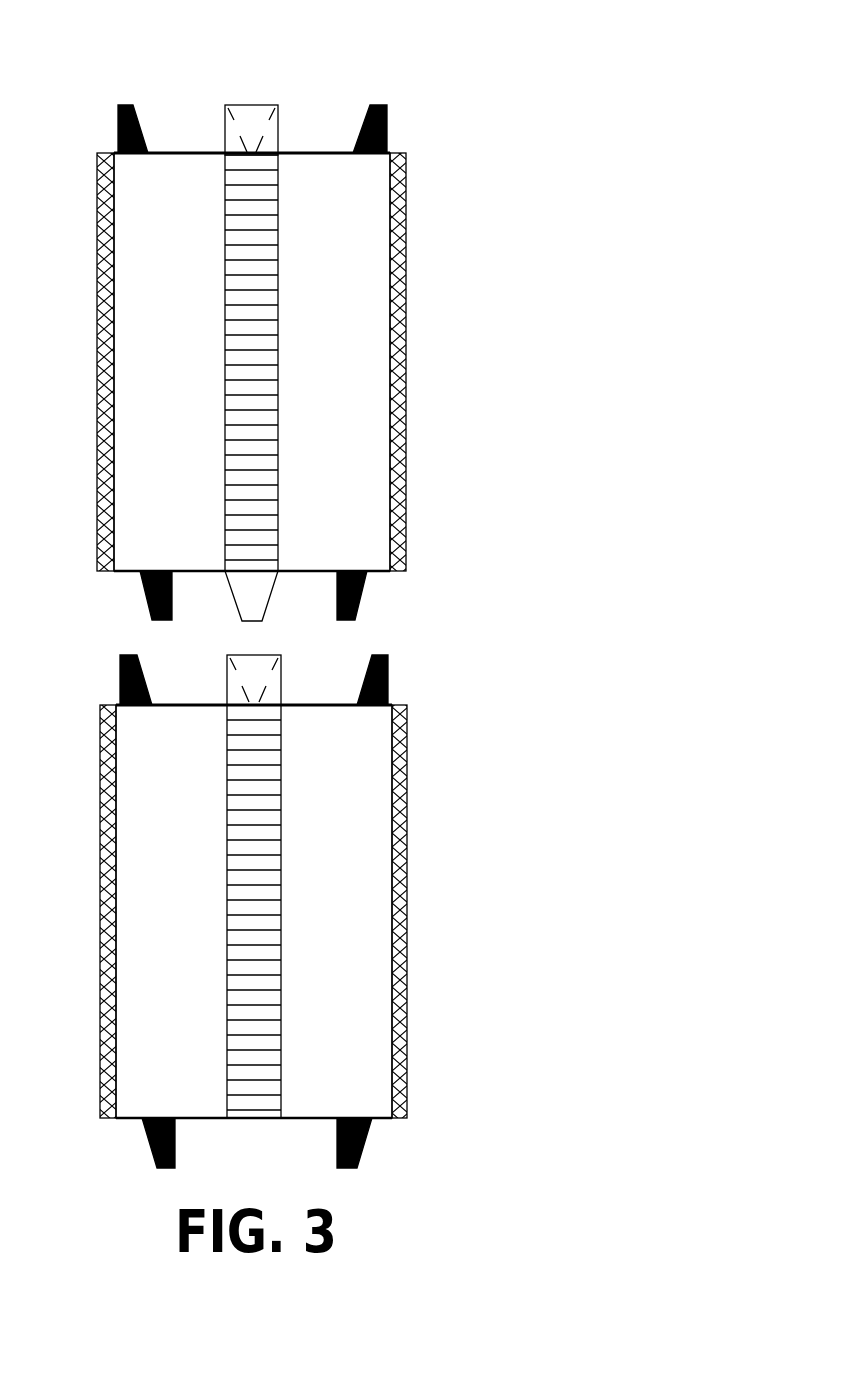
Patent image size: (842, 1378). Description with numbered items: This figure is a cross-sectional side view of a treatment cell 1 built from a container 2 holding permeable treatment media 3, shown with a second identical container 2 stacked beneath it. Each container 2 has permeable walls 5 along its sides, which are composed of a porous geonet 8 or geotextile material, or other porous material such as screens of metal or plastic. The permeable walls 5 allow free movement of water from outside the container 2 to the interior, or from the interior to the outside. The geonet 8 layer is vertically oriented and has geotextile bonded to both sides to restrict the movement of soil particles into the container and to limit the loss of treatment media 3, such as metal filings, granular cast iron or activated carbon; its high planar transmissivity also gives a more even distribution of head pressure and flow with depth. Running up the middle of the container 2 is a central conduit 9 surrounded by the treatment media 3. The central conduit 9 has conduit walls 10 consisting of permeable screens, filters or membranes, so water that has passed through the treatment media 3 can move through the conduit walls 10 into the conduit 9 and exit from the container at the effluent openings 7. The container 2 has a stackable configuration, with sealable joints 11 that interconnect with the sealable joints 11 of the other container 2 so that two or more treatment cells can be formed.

The treatment cell 1 is at (299, 588).
The container 2 is at (335, 869).
The treatment media 3 is at (438, 362).
The permeable walls 5 is at (300, 362).
The effluent openings 7 is at (206, 82).
The geonet 8 is at (491, 353).
The central conduit 9 is at (259, 430).
The conduit walls 10 is at (391, 518).
The sealable joints 11 is at (329, 405).